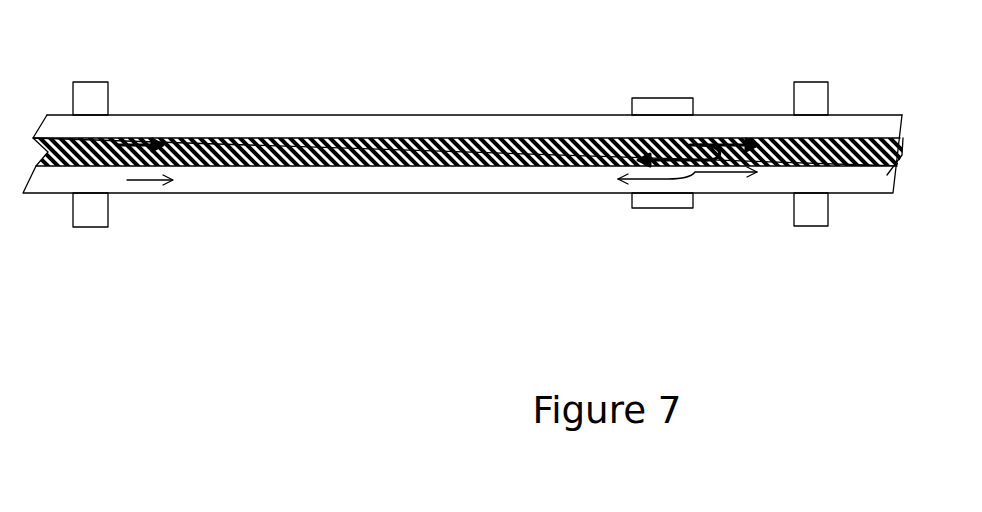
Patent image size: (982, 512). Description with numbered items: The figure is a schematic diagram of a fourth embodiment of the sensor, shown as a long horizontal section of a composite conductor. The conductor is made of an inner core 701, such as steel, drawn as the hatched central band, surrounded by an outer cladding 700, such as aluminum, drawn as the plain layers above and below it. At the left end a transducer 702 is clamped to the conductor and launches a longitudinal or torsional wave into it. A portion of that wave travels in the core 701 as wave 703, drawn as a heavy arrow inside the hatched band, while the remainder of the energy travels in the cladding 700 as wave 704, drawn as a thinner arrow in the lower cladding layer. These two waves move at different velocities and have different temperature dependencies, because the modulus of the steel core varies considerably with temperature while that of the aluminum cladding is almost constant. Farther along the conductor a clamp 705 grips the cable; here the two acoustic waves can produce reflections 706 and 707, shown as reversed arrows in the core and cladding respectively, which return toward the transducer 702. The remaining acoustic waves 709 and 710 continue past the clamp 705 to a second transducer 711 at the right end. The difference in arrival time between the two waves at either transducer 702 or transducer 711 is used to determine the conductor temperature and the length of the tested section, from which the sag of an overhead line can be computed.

The outer cladding 700 is at (430, 177).
The inner core 701 is at (377, 148).
The transducer 702 is at (87, 200).
The wave in core 703 is at (140, 142).
The wave in cladding 704 is at (138, 183).
The clamp 705 is at (680, 103).
The reflection in core 706 is at (652, 157).
The reflection in cladding 707 is at (645, 180).
The remaining acoustic wave in core 709 is at (721, 152).
The remaining acoustic wave in cladding 710 is at (721, 155).
The second transducer 711 is at (807, 212).